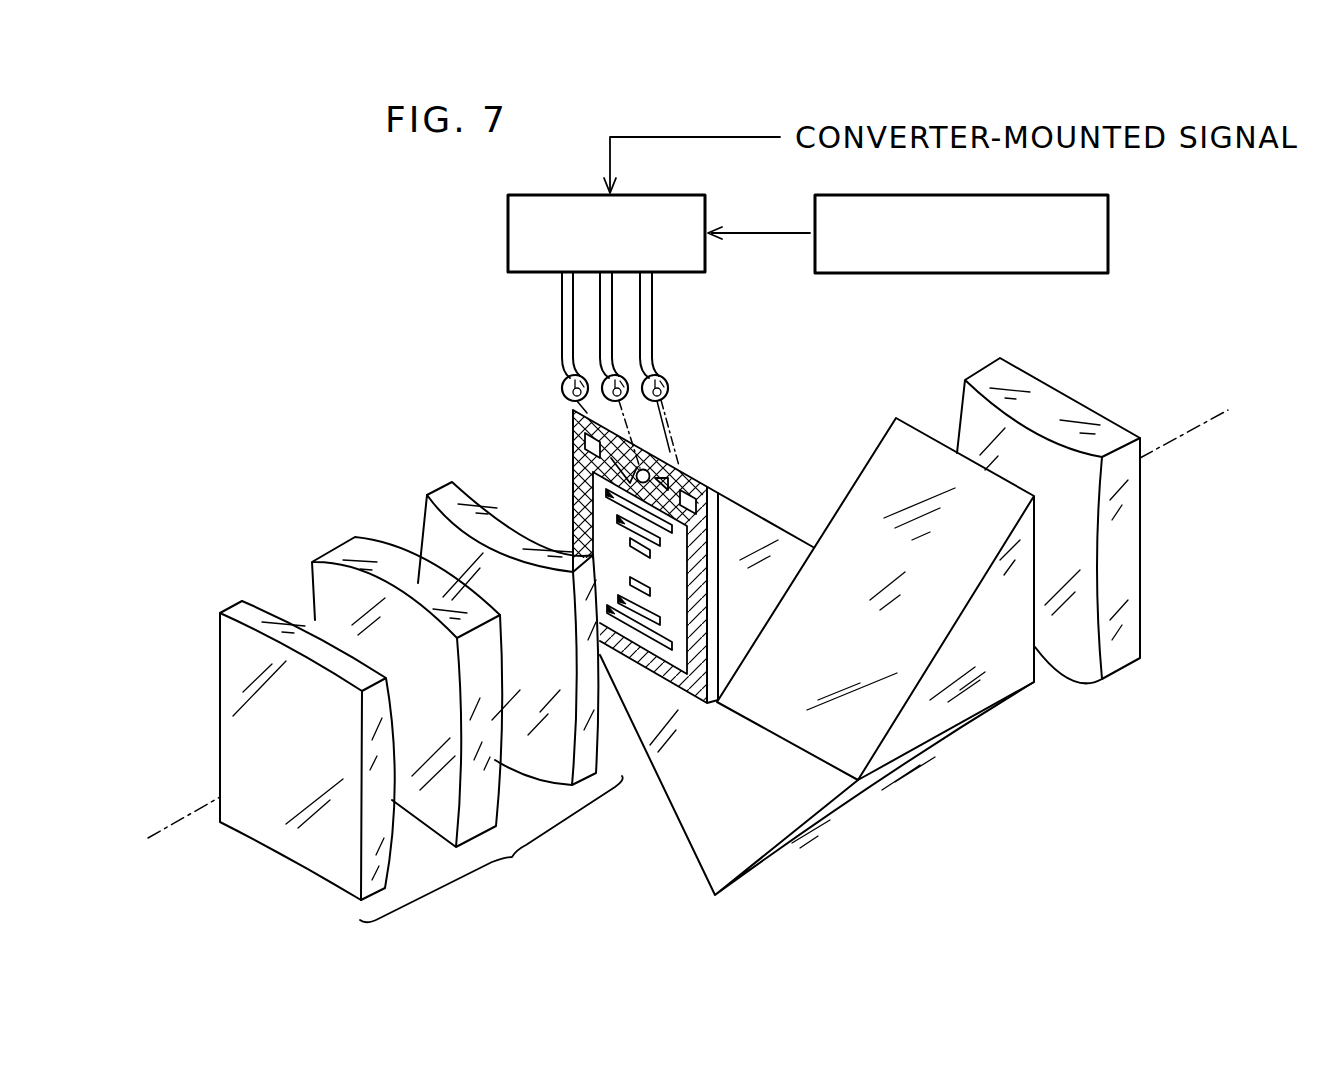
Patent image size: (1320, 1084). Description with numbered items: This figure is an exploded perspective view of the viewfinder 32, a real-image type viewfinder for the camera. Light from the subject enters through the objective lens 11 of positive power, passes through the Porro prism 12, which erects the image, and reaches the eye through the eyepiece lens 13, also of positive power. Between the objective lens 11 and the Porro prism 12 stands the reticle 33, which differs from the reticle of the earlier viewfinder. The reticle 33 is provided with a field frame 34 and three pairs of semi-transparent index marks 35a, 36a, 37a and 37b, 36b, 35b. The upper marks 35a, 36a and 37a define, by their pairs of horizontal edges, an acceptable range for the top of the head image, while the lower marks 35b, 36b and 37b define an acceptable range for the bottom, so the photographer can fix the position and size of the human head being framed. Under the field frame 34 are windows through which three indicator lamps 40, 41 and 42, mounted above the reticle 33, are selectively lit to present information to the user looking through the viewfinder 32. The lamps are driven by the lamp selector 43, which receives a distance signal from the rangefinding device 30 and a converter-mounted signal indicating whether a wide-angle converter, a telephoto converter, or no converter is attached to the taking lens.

The lamp selector 43 is at (508, 233).
The rangefinding device 30 is at (1108, 233).
The indicator lamp 41 is at (560, 383).
The indicator lamp 40 is at (622, 377).
The indicator lamp 42 is at (667, 380).
The reticle 33 is at (671, 567).
The field frame 34 is at (688, 652).
The index mark 35a is at (576, 442).
The index mark 36a is at (578, 470).
The index mark 37a is at (580, 497).
The index mark 37b is at (630, 581).
The index mark 36b is at (660, 620).
The index mark 35b is at (672, 646).
The objective lens 11 is at (385, 702).
The Porro prism 12 is at (827, 828).
The viewfinder 32 is at (990, 780).
The eyepiece lens 13 is at (1128, 593).